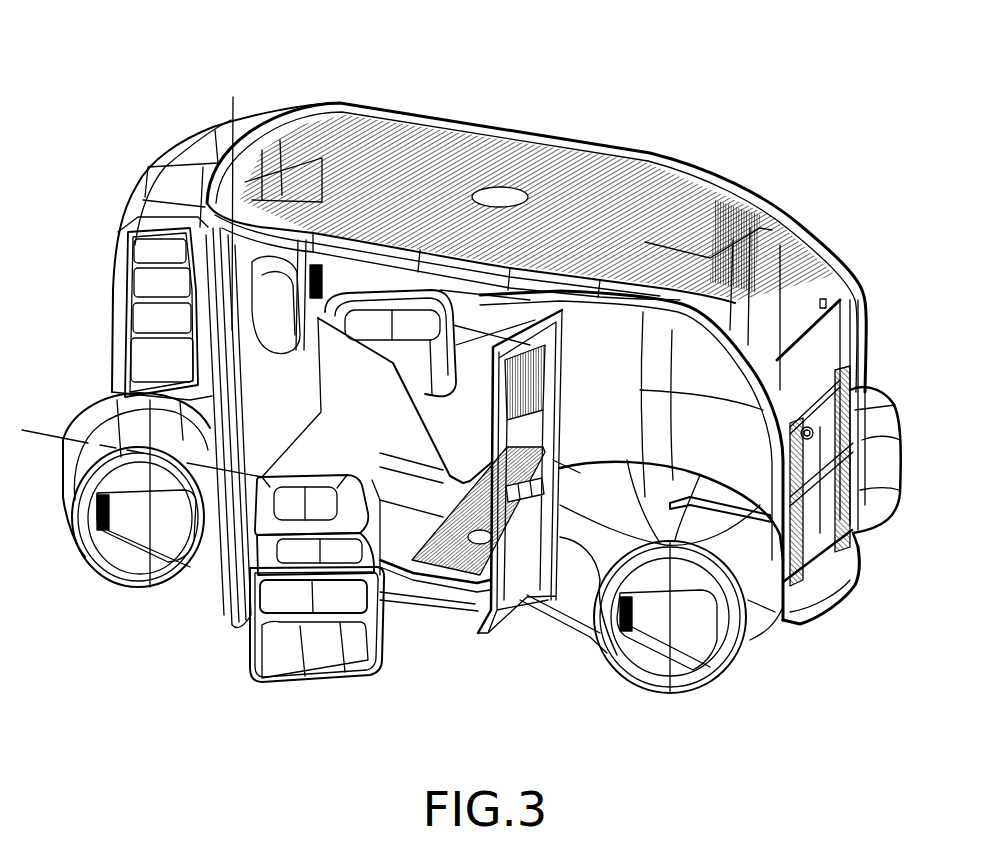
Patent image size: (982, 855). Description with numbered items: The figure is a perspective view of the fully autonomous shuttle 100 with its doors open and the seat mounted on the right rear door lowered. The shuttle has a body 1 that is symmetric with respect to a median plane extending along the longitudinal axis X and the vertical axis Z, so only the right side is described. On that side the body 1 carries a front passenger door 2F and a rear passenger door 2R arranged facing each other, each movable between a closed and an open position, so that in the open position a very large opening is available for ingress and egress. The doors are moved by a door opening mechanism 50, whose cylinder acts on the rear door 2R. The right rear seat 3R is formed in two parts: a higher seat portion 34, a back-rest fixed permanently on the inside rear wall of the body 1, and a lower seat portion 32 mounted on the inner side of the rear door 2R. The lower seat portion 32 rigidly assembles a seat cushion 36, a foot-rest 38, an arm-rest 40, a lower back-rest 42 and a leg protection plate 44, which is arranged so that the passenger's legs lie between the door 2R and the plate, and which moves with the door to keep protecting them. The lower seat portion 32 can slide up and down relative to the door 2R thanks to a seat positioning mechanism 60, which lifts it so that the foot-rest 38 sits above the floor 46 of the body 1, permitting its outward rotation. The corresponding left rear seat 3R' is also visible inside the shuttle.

The body 1 is at (553, 116).
The fully autonomous shuttle 100 is at (813, 177).
The door opening mechanism 50 is at (187, 382).
The seat positioning mechanism 60 is at (212, 509).
The higher seat portion 34 is at (287, 306).
The arm-rest 40 is at (358, 512).
The lower back-rest 42 is at (333, 500).
The floor 46 is at (404, 510).
The seat cushion 36 is at (390, 587).
The foot-rest 38 is at (288, 665).
The lower seat portion 32 is at (331, 687).
The leg protection plate 44 is at (378, 672).
The rear passenger door 2R is at (222, 605).
The front passenger door 2F is at (498, 615).
The rear passenger seat 3R is at (302, 729).
The left rear passenger seat 3R' is at (572, 330).
The longitudinal axis X is at (727, 570).
The vertical axis Z is at (233, 97).